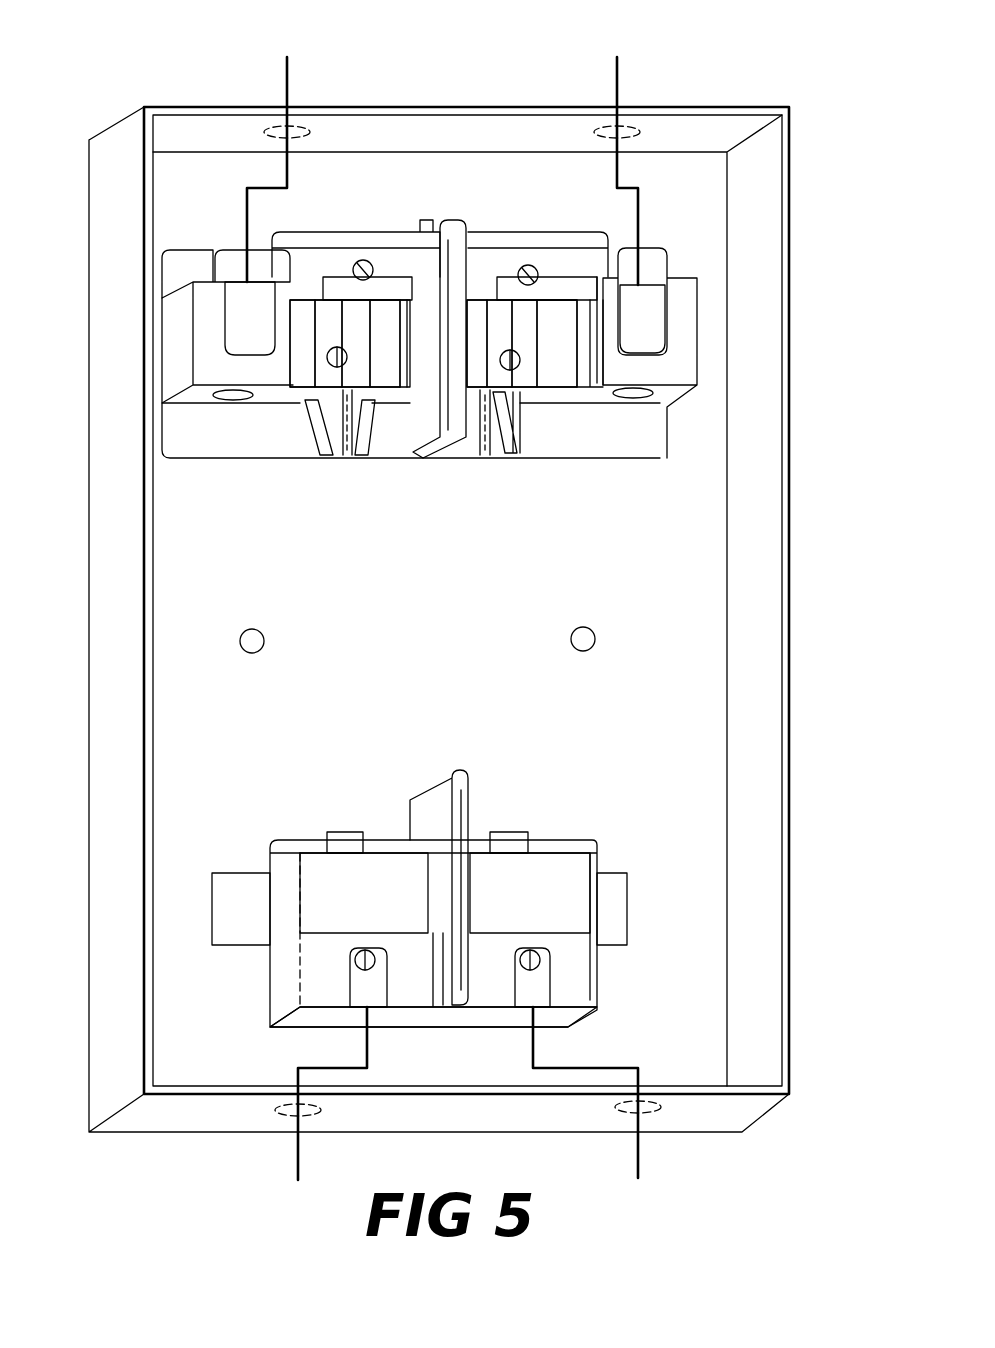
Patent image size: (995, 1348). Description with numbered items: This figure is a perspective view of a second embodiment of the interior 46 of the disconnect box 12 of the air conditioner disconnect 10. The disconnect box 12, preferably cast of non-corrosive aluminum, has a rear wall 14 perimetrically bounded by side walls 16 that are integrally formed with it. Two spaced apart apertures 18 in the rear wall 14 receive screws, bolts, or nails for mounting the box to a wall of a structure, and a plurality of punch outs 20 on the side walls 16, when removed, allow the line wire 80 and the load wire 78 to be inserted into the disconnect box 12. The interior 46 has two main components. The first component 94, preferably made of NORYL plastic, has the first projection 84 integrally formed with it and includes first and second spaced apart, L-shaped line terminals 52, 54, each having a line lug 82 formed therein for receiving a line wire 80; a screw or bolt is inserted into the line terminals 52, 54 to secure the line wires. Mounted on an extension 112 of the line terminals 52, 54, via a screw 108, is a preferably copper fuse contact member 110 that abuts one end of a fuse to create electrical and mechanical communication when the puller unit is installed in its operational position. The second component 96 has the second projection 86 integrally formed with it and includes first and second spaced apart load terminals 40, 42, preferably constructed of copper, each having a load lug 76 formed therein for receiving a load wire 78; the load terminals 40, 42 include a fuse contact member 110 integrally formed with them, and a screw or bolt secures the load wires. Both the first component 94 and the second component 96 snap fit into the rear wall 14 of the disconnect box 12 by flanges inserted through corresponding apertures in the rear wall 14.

The air conditioner disconnect 10 is at (122, 73).
The disconnect box 12 is at (837, 228).
The rear wall 14 is at (467, 606).
The side walls 16 is at (428, 108).
The apertures 18 is at (264, 641).
The punch outs 20 is at (302, 128).
The first load terminal 40 is at (310, 1016).
The second load terminal 42 is at (568, 1028).
The interior 46 is at (225, 532).
The first line terminal 52 is at (208, 346).
The second line terminal 54 is at (697, 330).
The load lug 76 is at (356, 968).
The load wire 78 is at (297, 1170).
The line wire 80 is at (286, 60).
The line lug 82 is at (258, 290).
The first projection 84 is at (462, 232).
The second projection 86 is at (468, 774).
The first component 94 is at (565, 487).
The second component 96 is at (300, 806).
The screw 108 is at (310, 368).
The fuse contact member 110 is at (365, 262).
The extension 112 is at (346, 458).